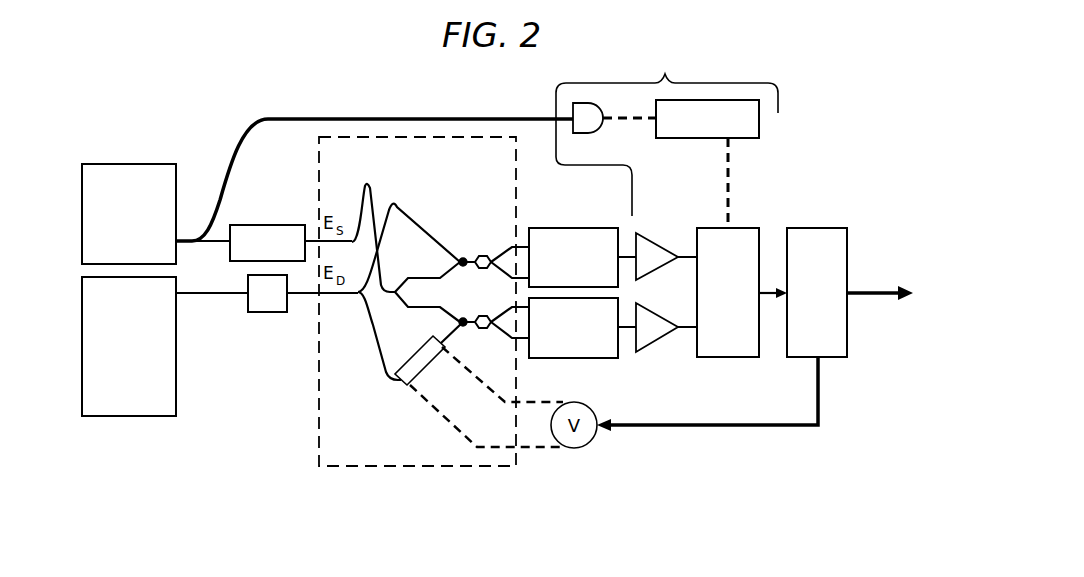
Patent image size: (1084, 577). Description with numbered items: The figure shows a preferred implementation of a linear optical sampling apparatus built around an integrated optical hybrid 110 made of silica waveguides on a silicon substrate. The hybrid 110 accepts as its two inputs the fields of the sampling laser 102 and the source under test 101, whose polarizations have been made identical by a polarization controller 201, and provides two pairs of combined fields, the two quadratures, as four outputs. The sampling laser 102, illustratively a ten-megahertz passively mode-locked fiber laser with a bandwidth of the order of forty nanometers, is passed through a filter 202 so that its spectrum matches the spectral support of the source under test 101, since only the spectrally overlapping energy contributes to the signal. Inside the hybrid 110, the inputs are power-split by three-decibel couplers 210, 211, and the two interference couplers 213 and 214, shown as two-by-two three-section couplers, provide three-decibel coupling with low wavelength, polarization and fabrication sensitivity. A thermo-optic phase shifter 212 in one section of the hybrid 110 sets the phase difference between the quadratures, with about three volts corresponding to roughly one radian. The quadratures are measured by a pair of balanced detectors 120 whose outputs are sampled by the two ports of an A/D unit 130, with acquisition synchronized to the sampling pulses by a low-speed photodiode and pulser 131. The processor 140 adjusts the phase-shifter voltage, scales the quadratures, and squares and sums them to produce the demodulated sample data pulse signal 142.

The source under test 101 is at (129, 416).
The sampling laser 102 is at (129, 164).
The hybrid 110 is at (420, 466).
The balanced detectors 120 is at (626, 222).
The A/D unit 130 is at (773, 362).
The low-speed photodiode and pulser 131 is at (321, 118).
The processor 140 is at (818, 228).
The demodulated sample data pulse signal 142 is at (887, 324).
The polarization controller 201 is at (268, 312).
The filter 202 is at (269, 225).
The 3-dB coupler 210 is at (427, 292).
The 3-dB coupler 211 is at (406, 282).
The thermo-optic phase shifter 212 is at (479, 391).
The interference coupler 213 is at (494, 253).
The interference coupler 214 is at (485, 316).